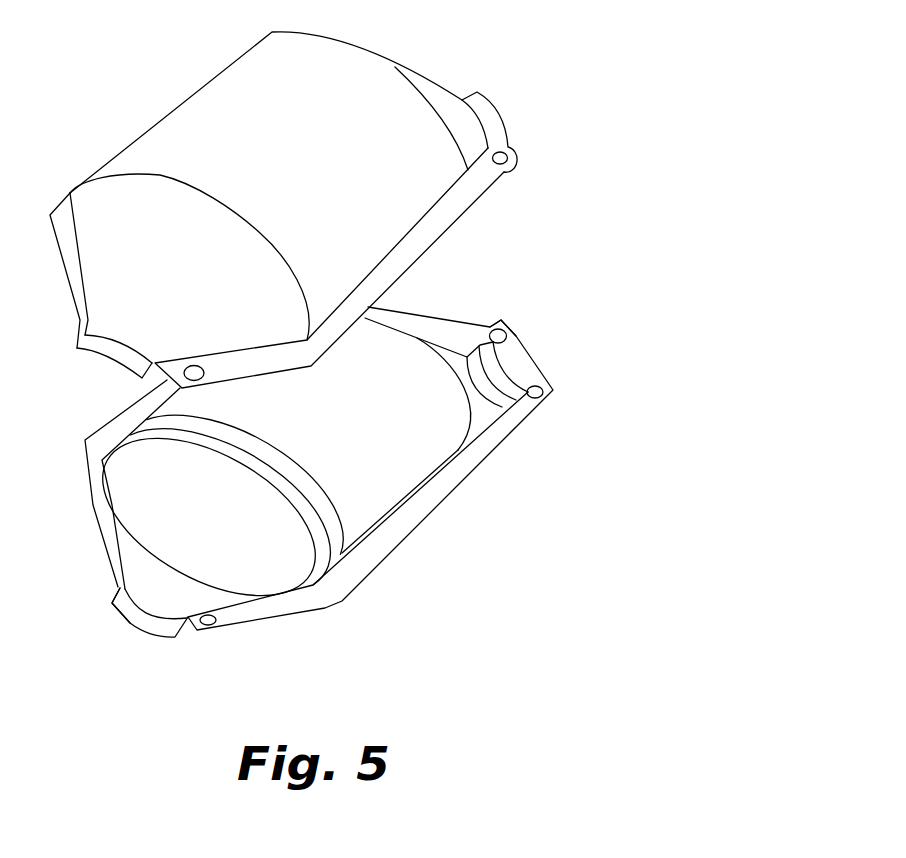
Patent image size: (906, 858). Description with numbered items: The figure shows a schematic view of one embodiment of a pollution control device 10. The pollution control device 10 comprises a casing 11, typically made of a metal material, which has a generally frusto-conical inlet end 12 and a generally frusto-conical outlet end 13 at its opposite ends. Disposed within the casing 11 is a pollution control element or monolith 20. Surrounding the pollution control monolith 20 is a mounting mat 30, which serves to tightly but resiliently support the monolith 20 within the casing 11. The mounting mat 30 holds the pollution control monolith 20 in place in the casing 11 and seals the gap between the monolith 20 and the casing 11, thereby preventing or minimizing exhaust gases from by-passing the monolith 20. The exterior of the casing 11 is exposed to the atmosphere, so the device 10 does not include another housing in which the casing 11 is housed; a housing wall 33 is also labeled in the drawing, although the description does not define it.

The pollution control device 10 is at (448, 82).
The casing 11 is at (177, 128).
The inlet end 12 is at (148, 623).
The outlet end 13 is at (512, 363).
The pollution control monolith 20 is at (257, 563).
The mounting mat 30 is at (400, 370).
The housing wall 33 is at (432, 442).